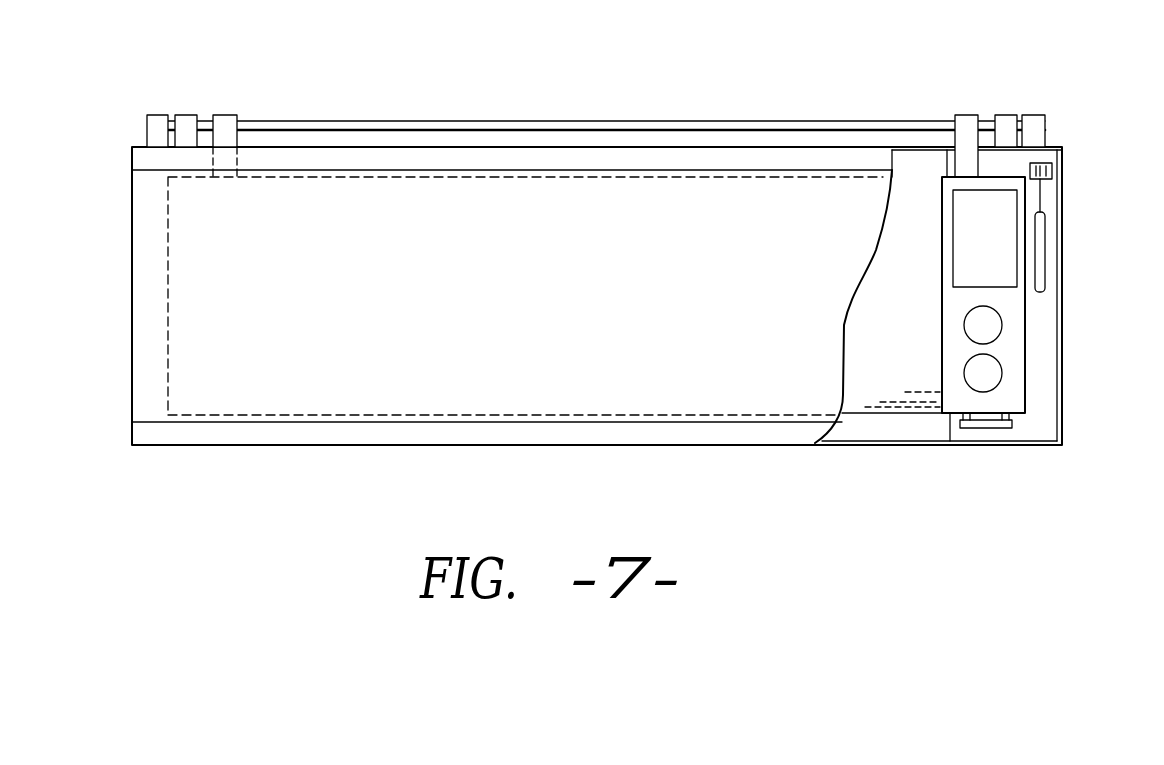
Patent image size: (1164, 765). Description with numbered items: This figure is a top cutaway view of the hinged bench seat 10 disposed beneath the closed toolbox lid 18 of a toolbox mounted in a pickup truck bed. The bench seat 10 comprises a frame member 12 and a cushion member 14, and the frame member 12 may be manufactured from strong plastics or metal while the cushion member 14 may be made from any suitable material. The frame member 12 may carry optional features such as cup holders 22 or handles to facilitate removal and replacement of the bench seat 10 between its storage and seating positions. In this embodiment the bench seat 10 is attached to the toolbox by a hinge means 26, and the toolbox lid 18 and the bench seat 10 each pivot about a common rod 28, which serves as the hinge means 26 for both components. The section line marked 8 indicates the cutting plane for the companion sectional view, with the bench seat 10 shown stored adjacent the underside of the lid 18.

The section line 8- 8 is at (125, 62).
The bench seat 10 is at (885, 368).
The frame member 12 is at (1010, 397).
The cushion member 14 is at (908, 198).
The hinged lid 18 is at (148, 262).
The cup holders 22 is at (985, 373).
The hinge means 26 is at (225, 131).
The common rod 28 is at (508, 120).